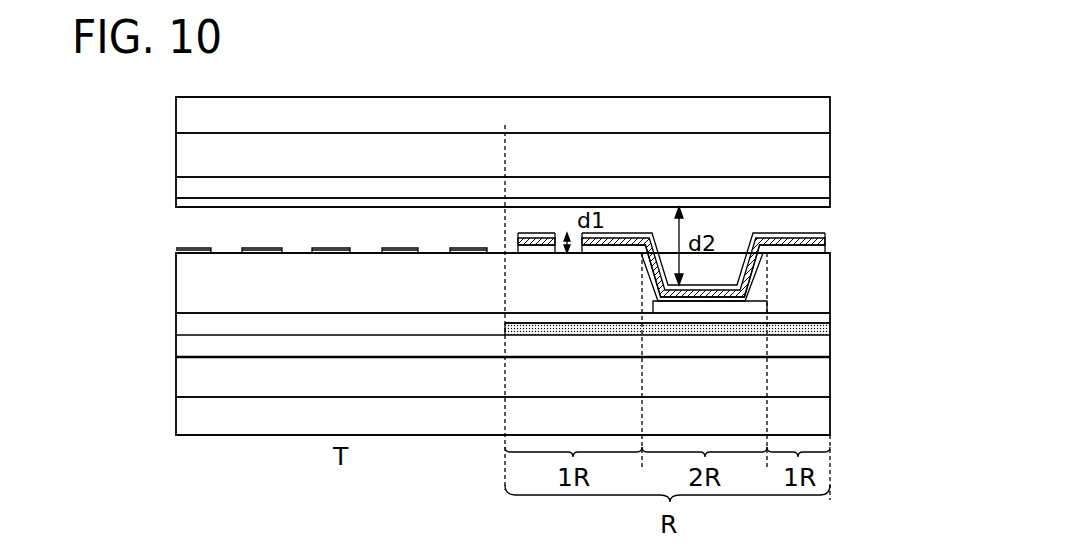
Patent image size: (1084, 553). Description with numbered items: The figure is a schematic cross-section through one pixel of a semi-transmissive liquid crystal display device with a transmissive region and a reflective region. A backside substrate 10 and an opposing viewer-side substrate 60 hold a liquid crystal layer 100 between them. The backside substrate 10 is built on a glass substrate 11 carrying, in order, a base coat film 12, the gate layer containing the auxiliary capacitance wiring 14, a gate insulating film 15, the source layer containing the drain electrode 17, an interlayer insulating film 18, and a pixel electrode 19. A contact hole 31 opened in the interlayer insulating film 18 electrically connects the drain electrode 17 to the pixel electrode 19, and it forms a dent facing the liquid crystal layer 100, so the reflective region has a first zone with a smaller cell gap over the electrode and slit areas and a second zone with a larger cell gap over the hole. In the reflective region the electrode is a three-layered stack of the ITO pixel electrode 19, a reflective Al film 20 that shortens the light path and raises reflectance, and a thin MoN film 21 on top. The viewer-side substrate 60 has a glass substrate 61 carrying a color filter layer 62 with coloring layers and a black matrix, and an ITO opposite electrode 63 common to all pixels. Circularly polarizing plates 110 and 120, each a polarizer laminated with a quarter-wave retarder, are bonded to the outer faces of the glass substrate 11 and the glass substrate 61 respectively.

The backside substrate 10 is at (172, 253).
The glass substrate 11 is at (831, 380).
The base coat film 12 is at (831, 352).
The auxiliary capacitance wiring 14 is at (831, 334).
The gate insulating film 15 is at (831, 320).
The drain electrode 17 is at (757, 308).
The interlayer insulating film 18 is at (824, 290).
The pixel electrode 19 is at (826, 250).
The Al film 20 is at (826, 243).
The MoN film 21 is at (826, 232).
The contact hole 31 is at (713, 275).
The viewer-side substrate 60 is at (172, 97).
The glass substrate 61 is at (831, 151).
The color filter layer 62 is at (831, 186).
The opposite electrode 63 is at (831, 204).
The liquid crystal layer 100 is at (172, 207).
The circularly polarizing plate 110 is at (831, 413).
The circularly polarizing plate 120 is at (831, 107).